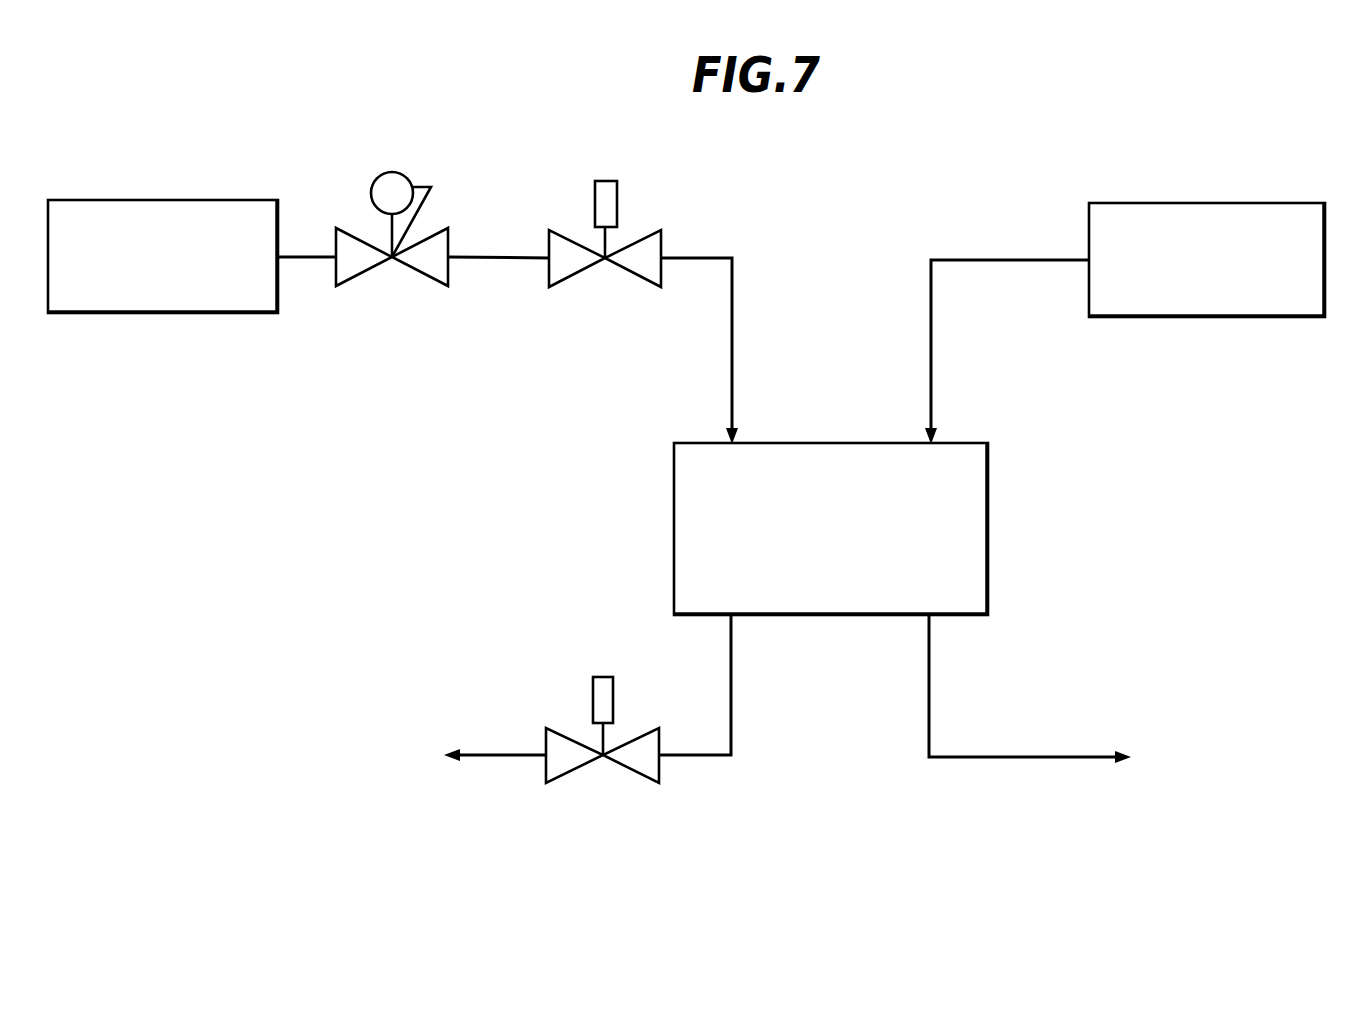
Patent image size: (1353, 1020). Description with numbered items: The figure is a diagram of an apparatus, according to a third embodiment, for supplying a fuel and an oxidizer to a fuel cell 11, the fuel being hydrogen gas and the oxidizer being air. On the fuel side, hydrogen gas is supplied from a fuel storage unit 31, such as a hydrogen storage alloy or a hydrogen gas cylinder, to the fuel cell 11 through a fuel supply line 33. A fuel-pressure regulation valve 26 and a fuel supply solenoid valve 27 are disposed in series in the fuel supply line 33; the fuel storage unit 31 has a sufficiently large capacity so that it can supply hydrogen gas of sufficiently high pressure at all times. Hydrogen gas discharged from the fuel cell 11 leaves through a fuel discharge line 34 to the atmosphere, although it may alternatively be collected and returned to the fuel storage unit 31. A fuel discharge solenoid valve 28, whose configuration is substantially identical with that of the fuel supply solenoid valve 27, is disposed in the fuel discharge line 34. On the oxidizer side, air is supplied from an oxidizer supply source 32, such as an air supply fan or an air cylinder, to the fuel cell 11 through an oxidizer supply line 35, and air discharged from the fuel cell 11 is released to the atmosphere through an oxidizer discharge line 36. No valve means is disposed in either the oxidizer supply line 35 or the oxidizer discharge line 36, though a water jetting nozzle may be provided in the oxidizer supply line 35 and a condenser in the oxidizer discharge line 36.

The fuel cell 11 is at (988, 527).
The fuel-pressure regulation valve 26 is at (420, 275).
The fuel supply solenoid valve 27 is at (643, 238).
The fuel discharge solenoid valve 28 is at (603, 677).
The fuel storage unit 31 is at (168, 200).
The oxidizer supply source 32 is at (1243, 203).
The fuel supply line 33 is at (732, 352).
The fuel discharge line 34 is at (731, 668).
The oxidizer supply line 35 is at (931, 357).
The oxidizer discharge line 36 is at (929, 685).